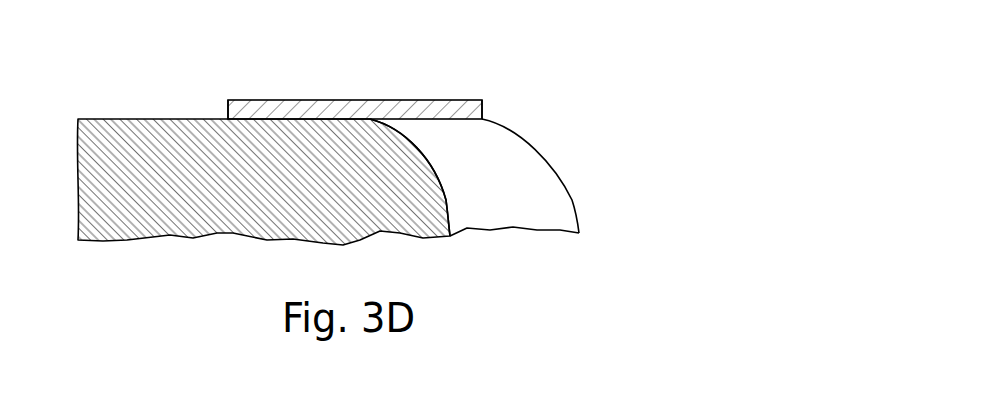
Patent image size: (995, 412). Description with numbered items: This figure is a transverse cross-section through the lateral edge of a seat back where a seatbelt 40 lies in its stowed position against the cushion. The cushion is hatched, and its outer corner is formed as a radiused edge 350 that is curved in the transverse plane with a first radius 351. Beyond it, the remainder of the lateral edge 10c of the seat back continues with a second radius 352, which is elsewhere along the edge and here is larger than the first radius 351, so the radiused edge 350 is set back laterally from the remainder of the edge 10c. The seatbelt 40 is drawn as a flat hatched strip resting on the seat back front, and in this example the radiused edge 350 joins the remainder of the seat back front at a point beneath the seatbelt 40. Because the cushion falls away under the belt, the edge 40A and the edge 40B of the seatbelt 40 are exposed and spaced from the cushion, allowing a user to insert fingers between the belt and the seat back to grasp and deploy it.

The seatbelt 40 is at (455, 100).
The edge of the seatbelt 40A is at (483, 116).
The edge of the seatbelt 40B is at (228, 105).
The radiused edge 350 is at (223, 213).
The first radius 351 is at (446, 197).
The second radius 352 is at (575, 206).
The lateral edge of the seat back 10c is at (512, 213).